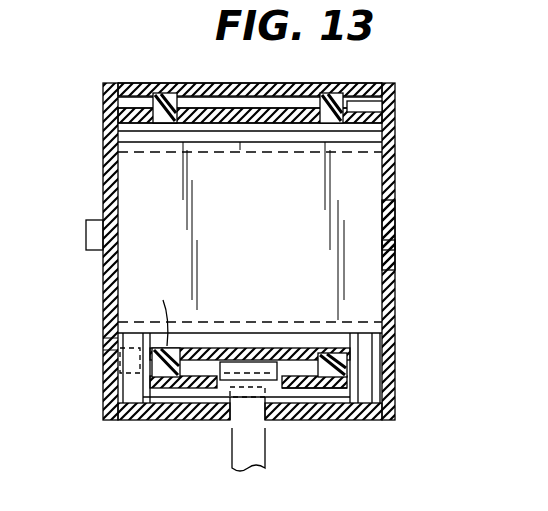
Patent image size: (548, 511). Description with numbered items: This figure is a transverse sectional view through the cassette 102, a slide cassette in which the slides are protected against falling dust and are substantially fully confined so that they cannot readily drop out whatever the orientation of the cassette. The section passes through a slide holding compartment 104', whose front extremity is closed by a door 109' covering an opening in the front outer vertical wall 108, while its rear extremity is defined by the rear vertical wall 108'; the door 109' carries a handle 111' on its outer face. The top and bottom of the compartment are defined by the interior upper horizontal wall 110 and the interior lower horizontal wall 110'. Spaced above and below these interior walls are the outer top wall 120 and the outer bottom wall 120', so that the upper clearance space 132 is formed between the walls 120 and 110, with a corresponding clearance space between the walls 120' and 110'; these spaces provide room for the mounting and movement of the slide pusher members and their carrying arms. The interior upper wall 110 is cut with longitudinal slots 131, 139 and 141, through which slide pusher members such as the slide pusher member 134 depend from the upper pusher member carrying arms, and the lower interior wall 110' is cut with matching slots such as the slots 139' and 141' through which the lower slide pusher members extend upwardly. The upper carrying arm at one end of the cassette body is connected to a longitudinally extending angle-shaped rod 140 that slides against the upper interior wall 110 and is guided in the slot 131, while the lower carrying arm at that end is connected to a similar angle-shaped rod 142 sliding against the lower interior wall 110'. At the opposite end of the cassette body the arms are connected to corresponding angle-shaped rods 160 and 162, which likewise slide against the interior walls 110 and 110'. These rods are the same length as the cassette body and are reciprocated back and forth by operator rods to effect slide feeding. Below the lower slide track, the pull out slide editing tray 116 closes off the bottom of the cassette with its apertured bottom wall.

The cassette 102 is at (233, 79).
The slide holding compartment 104' is at (419, 225).
The front outer vertical wall 108 is at (424, 251).
The rear vertical wall 108' is at (425, 258).
The door 109' is at (75, 251).
The interior upper horizontal wall 110 is at (264, 154).
The interior lower horizontal wall 110' is at (247, 378).
The handle 111' is at (60, 236).
The pull out slide editing tray 116 is at (100, 344).
The outer top wall 120 is at (250, 67).
The outer bottom wall 120' is at (250, 407).
The longitudinal slot 131 is at (167, 124).
The upper clearance space 132 is at (306, 104).
The slide pusher member 134 is at (307, 413).
The longitudinal slot 139 is at (314, 225).
The longitudinal slot 139' is at (302, 342).
The angle-shaped rod 140 is at (164, 93).
The longitudinal slot 141 is at (214, 216).
The longitudinal slot 141' is at (171, 311).
The angle-shaped rod 142 is at (330, 352).
The angle-shaped rod 160 is at (340, 92).
The angle-shaped rod 162 is at (150, 407).